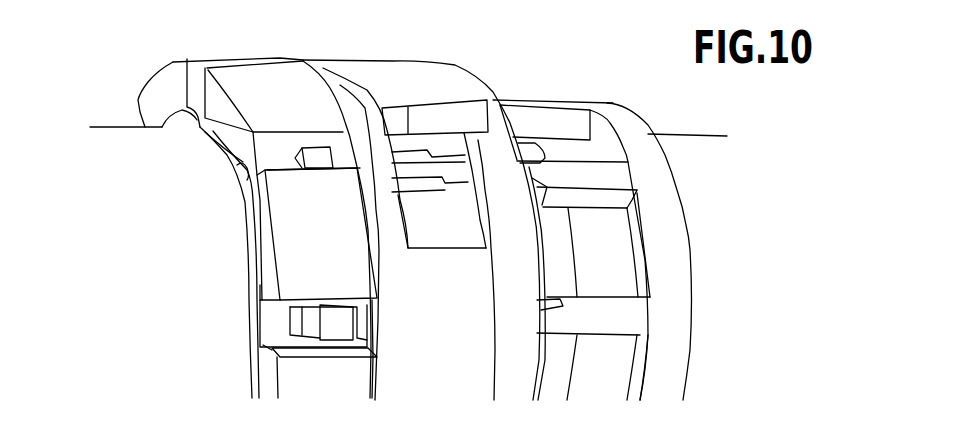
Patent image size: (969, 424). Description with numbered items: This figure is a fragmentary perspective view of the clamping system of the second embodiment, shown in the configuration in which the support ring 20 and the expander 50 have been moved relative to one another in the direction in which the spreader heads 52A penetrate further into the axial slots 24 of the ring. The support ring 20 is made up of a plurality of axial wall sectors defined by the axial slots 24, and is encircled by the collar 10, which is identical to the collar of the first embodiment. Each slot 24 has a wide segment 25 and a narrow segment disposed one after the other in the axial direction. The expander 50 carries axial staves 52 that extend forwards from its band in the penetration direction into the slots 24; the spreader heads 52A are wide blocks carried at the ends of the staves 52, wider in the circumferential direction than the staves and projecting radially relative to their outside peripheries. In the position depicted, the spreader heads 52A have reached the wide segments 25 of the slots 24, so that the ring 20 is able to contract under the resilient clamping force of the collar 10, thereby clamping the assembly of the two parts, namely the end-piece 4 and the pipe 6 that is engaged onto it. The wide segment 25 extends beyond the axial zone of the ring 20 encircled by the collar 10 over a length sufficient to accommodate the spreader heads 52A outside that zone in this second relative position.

The end-piece 4 is at (103, 140).
The pipe 6 is at (694, 151).
The collar 10 is at (458, 58).
The support ring 20 is at (145, 64).
The axial slots 24 is at (403, 157).
The wide segment 25 is at (323, 138).
The expander 50 is at (620, 92).
The axial staves 52 is at (440, 172).
The spreader heads 52A is at (322, 162).